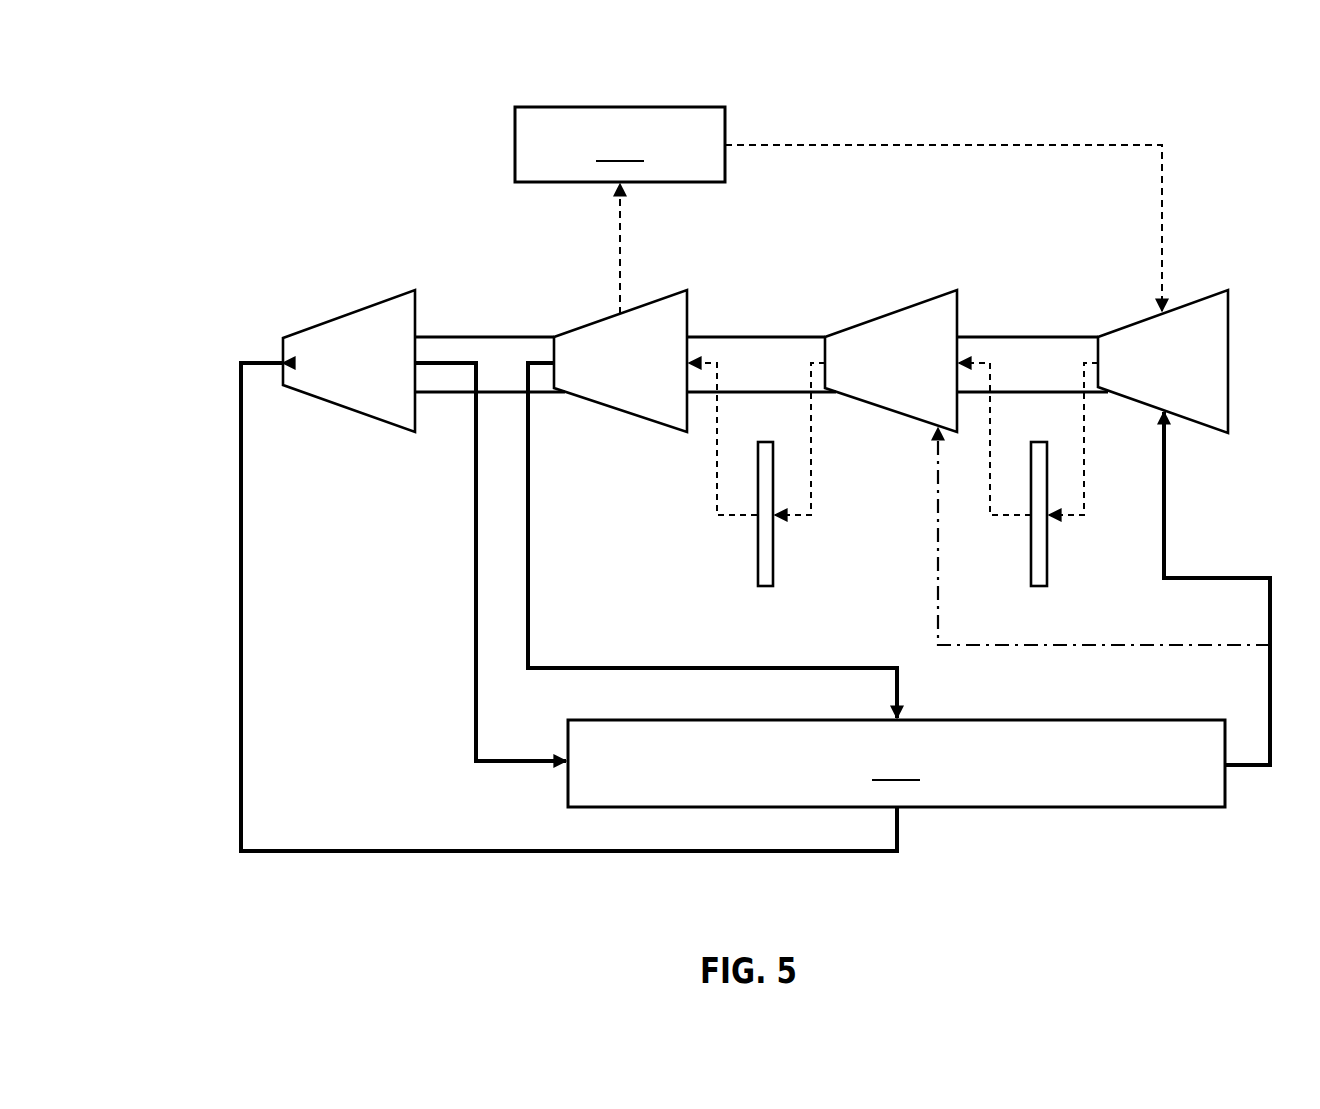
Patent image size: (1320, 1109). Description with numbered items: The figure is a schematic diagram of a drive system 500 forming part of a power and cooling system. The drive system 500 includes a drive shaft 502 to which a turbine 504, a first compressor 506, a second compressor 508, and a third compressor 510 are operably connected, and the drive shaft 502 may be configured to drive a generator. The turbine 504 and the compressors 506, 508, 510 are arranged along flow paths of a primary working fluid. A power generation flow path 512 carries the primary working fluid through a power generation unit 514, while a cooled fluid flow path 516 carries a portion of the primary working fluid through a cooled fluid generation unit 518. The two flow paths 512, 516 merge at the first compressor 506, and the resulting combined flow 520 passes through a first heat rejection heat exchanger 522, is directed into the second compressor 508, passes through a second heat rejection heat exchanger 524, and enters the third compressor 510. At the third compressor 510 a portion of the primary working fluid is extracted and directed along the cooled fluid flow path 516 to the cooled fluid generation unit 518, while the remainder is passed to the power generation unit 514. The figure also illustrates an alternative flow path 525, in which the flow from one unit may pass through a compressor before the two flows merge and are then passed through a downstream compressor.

The drive system 500 is at (238, 112).
The drive shaft 502 is at (487, 335).
The turbine 504 is at (348, 312).
The first compressor 506 is at (1130, 322).
The second compressor 508 is at (890, 312).
The third compressor 510 is at (622, 413).
The power generation flow path 512 is at (352, 853).
The power generation unit 514 is at (896, 763).
The cooled fluid flow path 516 is at (618, 270).
The cooled fluid generation unit 518 is at (620, 144).
The combined flow 520 is at (812, 470).
The first heat rejection heat exchanger 522 is at (1035, 590).
The second heat rejection heat exchanger 524 is at (762, 590).
The flow path 525 is at (1068, 648).